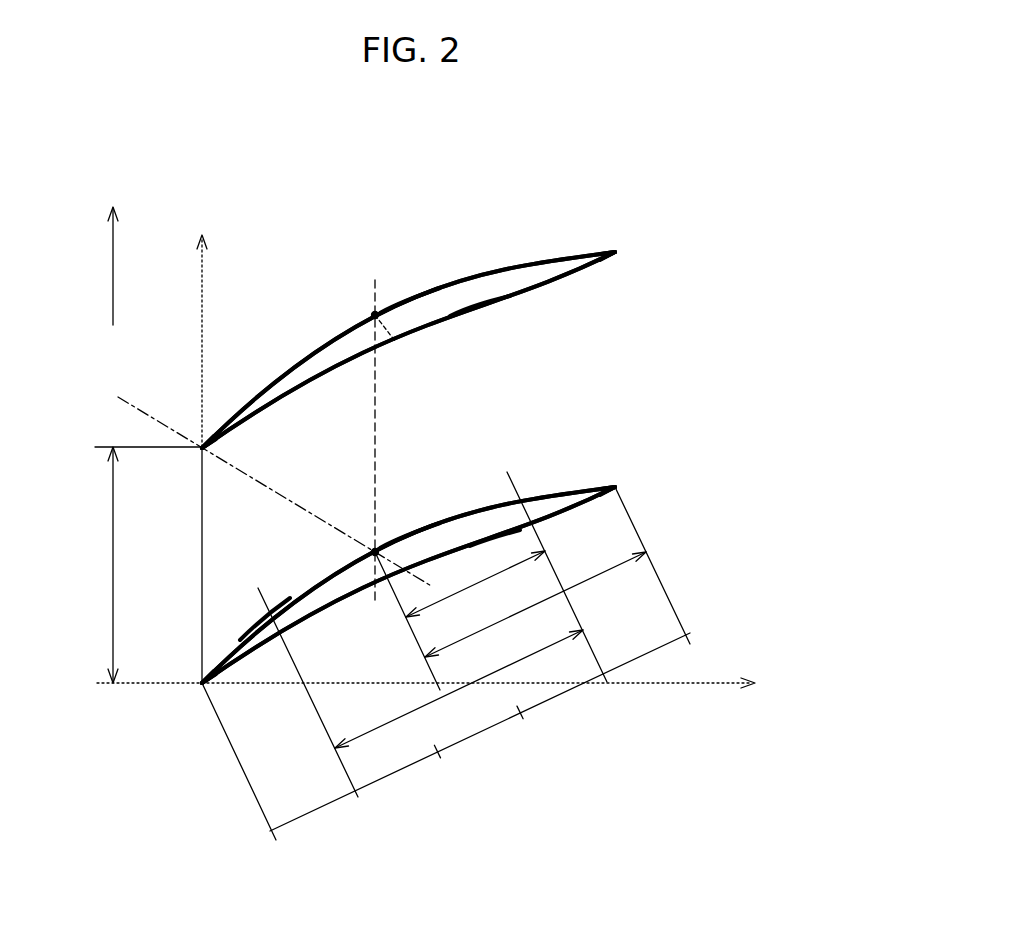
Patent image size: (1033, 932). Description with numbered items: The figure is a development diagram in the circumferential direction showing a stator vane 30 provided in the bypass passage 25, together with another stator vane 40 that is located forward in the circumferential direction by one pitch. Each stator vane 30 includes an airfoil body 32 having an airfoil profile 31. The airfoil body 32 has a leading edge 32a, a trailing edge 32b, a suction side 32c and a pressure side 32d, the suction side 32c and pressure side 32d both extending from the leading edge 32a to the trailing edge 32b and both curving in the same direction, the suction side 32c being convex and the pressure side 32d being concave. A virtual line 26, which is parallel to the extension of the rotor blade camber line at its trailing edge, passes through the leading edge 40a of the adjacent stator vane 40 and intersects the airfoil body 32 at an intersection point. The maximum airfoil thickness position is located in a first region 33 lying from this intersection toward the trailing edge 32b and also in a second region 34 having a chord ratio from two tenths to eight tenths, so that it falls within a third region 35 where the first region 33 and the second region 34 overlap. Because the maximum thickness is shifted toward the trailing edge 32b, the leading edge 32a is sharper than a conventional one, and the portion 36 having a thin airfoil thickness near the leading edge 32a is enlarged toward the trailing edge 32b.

The bypass passage 25 is at (296, 206).
The line 26 is at (281, 493).
The stator vane 30 is at (469, 399).
The airfoil profile 31 is at (563, 276).
The airfoil body 32 is at (530, 265).
The leading edge 32a is at (170, 602).
The trailing edge 32b is at (617, 251).
The suction side 32c is at (437, 289).
The pressure side 32d is at (480, 307).
The first region 33 is at (490, 628).
The second region 34 is at (395, 720).
The third region 35 is at (443, 600).
The portion having a thin airfoil thickness 36 is at (262, 623).
The stator vane 40 is at (606, 415).
The leading edge 40a is at (170, 495).